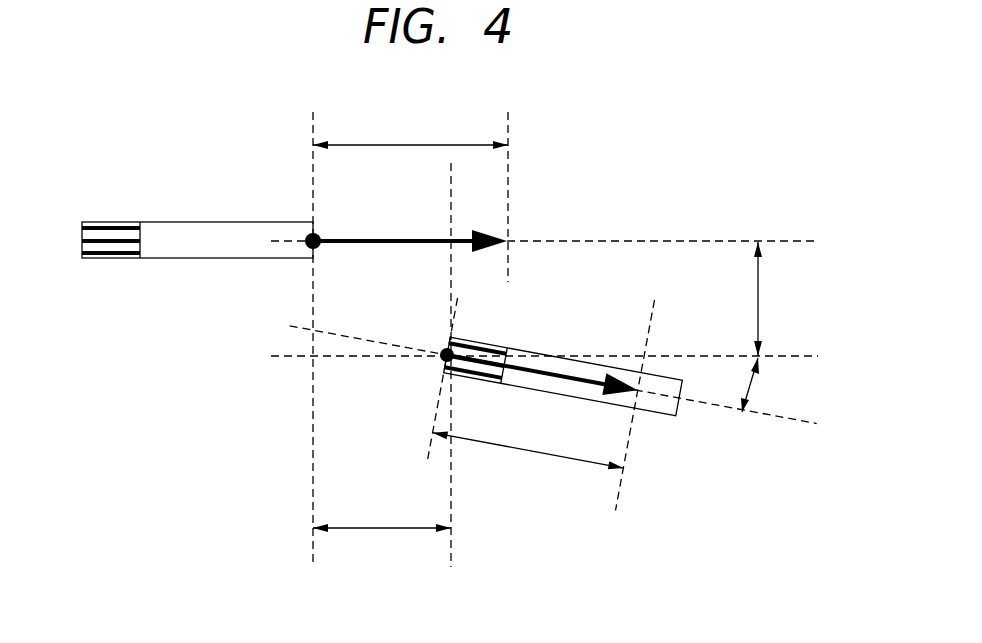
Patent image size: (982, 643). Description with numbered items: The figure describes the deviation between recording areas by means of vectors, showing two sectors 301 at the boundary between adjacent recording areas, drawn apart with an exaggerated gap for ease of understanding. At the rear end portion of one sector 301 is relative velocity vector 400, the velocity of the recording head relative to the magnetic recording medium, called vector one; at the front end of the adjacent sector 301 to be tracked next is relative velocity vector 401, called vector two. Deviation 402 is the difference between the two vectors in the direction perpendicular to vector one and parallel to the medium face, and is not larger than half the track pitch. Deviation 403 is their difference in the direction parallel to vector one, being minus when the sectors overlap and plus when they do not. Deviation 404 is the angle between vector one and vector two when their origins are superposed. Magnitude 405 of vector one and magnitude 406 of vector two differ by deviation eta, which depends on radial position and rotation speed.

The sector 301 is at (385, 319).
The relative velocity vector 400 is at (306, 237).
The relative velocity vector 401 is at (441, 359).
The deviation 402 is at (760, 297).
The deviation 403 is at (380, 530).
The deviation 404 is at (749, 384).
The magnitude of vector 1 405 is at (415, 143).
The magnitude of vector 2 406 is at (530, 451).